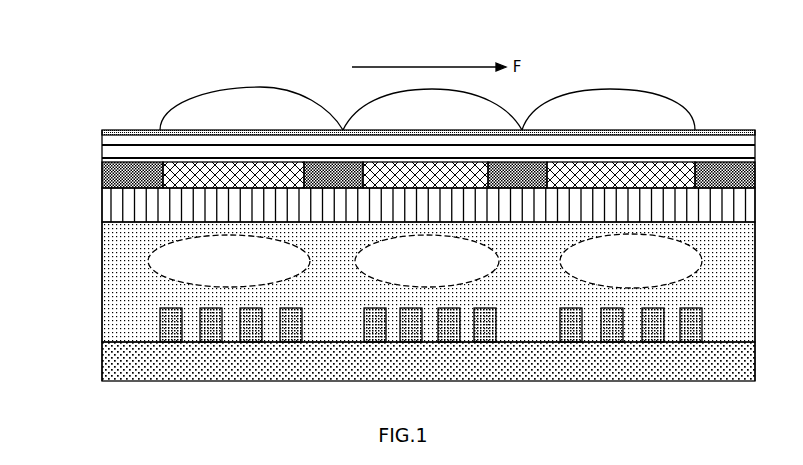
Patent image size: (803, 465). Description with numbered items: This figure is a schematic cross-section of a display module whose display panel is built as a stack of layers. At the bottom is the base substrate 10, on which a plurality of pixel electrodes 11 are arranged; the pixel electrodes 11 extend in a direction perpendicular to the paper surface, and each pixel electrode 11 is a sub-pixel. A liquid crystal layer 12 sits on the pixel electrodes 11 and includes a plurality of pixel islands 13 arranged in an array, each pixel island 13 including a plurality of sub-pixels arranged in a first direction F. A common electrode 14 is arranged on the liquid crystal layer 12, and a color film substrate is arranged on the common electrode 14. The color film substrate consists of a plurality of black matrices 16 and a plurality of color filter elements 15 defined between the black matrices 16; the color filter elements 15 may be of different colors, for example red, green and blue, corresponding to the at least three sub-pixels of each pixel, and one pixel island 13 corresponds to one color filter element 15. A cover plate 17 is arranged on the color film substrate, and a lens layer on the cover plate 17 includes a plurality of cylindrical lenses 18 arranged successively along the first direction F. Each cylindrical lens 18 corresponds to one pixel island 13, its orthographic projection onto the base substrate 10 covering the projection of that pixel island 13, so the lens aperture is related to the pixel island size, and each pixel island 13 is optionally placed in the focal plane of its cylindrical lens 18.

The base substrate 10 is at (160, 360).
The pixel electrodes 11 is at (162, 315).
The liquid crystal layer 12 is at (123, 287).
The pixel islands 13 is at (148, 262).
The common electrode 14 is at (125, 205).
The color filter elements 15 is at (429, 175).
The black matrices 16 is at (428, 175).
The cover plate 17 is at (130, 143).
The cylindrical lenses 18 is at (185, 102).